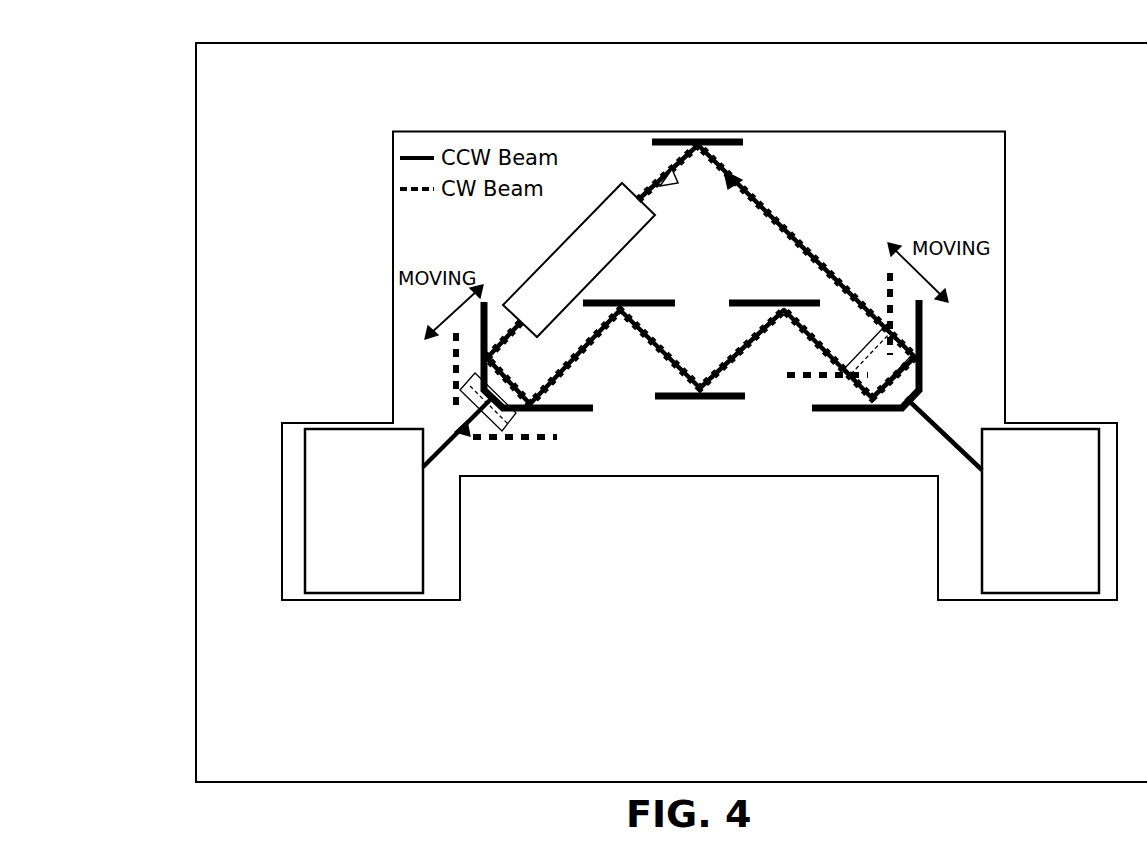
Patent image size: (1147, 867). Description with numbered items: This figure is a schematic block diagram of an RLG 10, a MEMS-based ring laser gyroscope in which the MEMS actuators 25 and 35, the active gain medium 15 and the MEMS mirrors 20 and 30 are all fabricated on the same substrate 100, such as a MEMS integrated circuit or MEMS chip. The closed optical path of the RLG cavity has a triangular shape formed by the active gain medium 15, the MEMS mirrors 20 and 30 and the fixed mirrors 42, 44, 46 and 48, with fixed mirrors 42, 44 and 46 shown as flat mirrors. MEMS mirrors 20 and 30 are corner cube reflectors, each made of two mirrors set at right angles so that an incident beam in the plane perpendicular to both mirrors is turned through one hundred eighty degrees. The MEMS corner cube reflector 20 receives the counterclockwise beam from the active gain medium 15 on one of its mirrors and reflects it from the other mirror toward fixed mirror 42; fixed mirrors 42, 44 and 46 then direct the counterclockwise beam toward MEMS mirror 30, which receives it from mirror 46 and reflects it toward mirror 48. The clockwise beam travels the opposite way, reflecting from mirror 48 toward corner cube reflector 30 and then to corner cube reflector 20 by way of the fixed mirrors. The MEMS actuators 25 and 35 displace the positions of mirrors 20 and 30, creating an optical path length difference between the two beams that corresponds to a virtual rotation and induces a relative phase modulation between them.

The RLG 10 is at (162, 80).
The substrate 100 is at (1114, 120).
The active gain medium 15 is at (590, 270).
The MEMS mirror 20 is at (540, 410).
The MEMS actuator 25 is at (353, 530).
The MEMS mirror 30 is at (918, 356).
The MEMS actuator 35 is at (1030, 530).
The fixed mirror 42 is at (629, 299).
The fixed mirror 44 is at (677, 400).
The fixed mirror 46 is at (763, 299).
The fixed mirror 48 is at (731, 138).